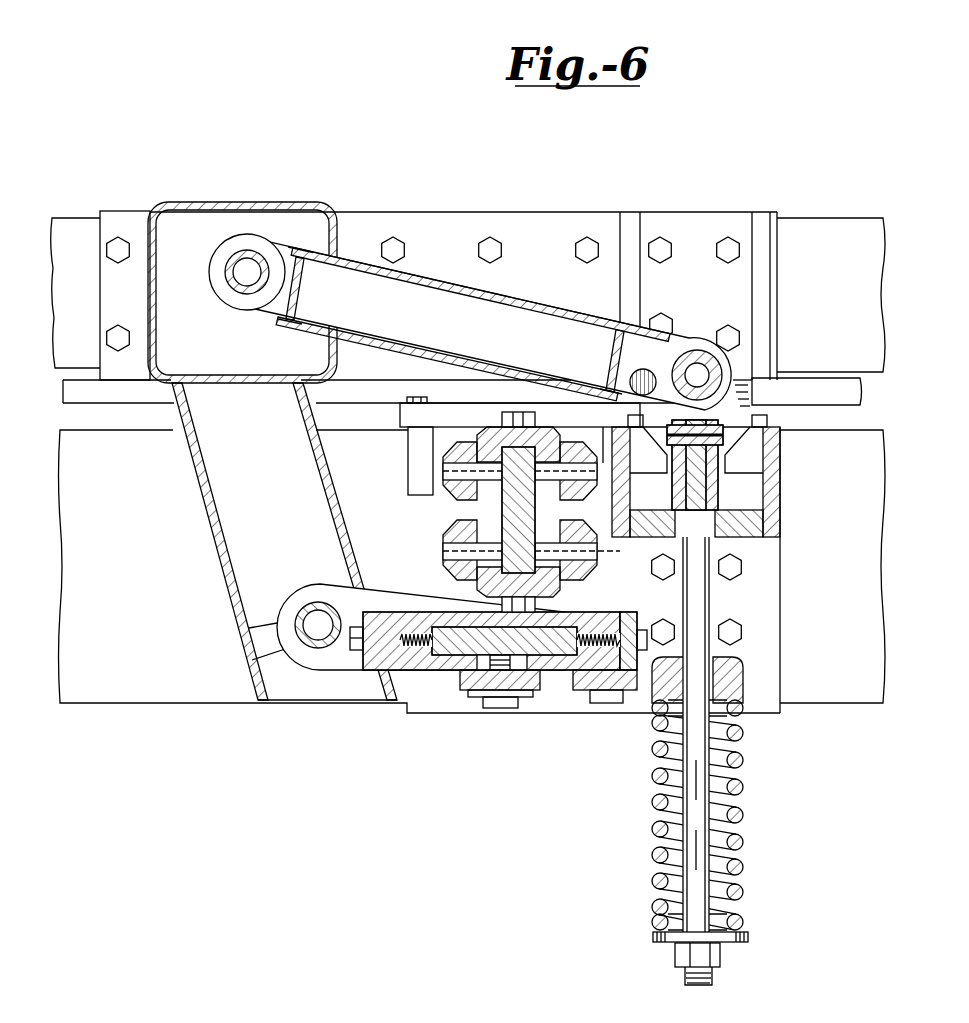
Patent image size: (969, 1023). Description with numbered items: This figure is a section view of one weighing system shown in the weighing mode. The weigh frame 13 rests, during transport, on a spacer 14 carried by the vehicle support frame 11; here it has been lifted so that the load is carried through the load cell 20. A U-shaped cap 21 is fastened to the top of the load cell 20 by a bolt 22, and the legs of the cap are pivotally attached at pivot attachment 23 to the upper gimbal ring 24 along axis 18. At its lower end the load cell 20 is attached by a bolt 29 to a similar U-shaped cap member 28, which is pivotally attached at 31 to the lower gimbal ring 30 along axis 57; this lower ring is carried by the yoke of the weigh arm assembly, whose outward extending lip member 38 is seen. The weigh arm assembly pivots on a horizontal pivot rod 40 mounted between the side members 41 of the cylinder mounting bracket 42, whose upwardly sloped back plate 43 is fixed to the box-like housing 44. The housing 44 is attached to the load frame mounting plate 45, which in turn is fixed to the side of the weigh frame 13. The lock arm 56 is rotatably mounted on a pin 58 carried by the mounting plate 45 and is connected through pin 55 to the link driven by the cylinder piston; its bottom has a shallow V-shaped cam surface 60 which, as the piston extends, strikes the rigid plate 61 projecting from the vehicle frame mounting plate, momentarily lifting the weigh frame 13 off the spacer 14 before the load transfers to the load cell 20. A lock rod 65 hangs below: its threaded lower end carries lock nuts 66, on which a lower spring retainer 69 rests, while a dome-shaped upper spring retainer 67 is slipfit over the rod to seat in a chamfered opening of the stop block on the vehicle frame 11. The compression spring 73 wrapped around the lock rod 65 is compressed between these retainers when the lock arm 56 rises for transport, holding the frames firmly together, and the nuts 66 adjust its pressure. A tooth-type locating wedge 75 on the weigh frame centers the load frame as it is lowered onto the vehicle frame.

The vehicle support frame 11 is at (833, 516).
The weigh frame 13 is at (814, 305).
The spacer 14 is at (821, 401).
The gimbal ring pivot axis 18 is at (679, 476).
The load cell 20 is at (505, 508).
The U-shaped cap 21 is at (470, 427).
The bolt 22 is at (523, 412).
The pivot attachment 23 is at (455, 470).
The upper gimbal ring 24 is at (448, 447).
The lower U-shaped cap member 28 is at (483, 593).
The bolt 29 is at (536, 608).
The lower gimbal ring 30 is at (580, 580).
The pivot attachment 31 is at (443, 550).
The lip member 38 is at (580, 690).
The pivot rod 40 is at (305, 648).
The side members 41 is at (267, 541).
The cylinder mounting bracket 42 is at (215, 583).
The back plate 43 is at (200, 503).
The box-like housing 44 is at (195, 203).
The load frame mounting plate 45 is at (413, 212).
The pin 55 is at (640, 372).
The lock arm 56 is at (506, 290).
The pivot axis 57 is at (580, 540).
The pin 58 is at (228, 284).
The cam surface 60 is at (400, 398).
The rigid plate 61 is at (398, 411).
The lock rod 65 is at (713, 607).
The lock nuts 66 is at (722, 950).
The upper spring retainer 67 is at (725, 662).
The lower spring retainer 69 is at (748, 935).
The compression spring 73 is at (740, 788).
The locating wedge 75 is at (753, 390).